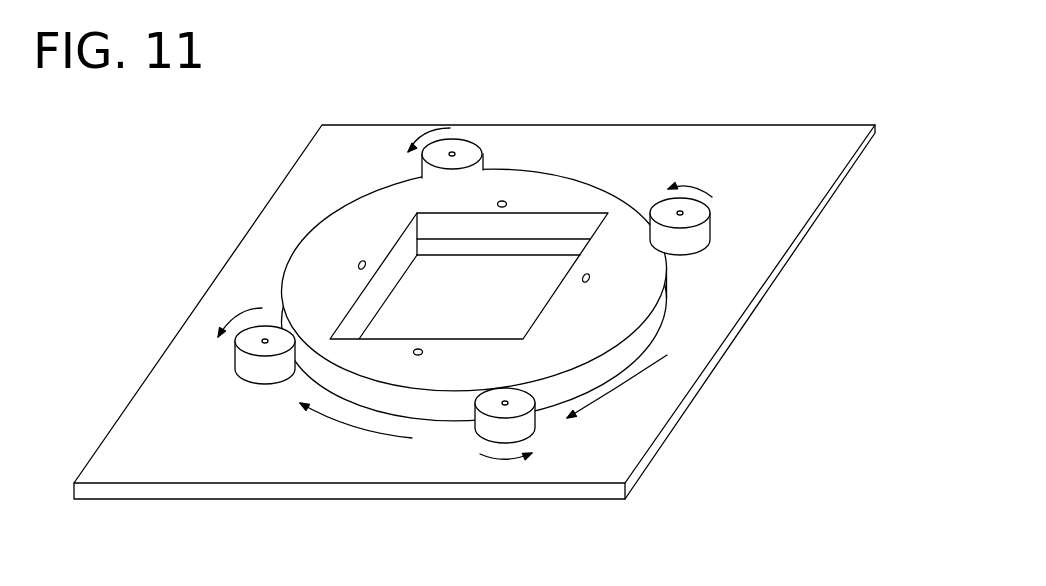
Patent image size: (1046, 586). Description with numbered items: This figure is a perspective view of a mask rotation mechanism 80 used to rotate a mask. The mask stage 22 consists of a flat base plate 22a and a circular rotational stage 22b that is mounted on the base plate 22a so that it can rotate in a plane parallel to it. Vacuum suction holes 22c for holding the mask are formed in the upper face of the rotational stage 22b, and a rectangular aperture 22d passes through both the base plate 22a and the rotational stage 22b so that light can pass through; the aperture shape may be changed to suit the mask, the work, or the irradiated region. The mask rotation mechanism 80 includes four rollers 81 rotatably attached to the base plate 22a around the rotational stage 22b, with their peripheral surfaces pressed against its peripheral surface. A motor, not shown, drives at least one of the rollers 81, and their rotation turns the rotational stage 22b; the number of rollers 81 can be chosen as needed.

The mask rotation mechanism 80 is at (483, 304).
The mask stage 22 is at (474, 267).
The base plate 22a is at (758, 143).
The rotational stage 22b is at (607, 318).
The vacuum suction holes 22c is at (592, 277).
The aperture 22d is at (567, 215).
The rollers 81 is at (457, 143).